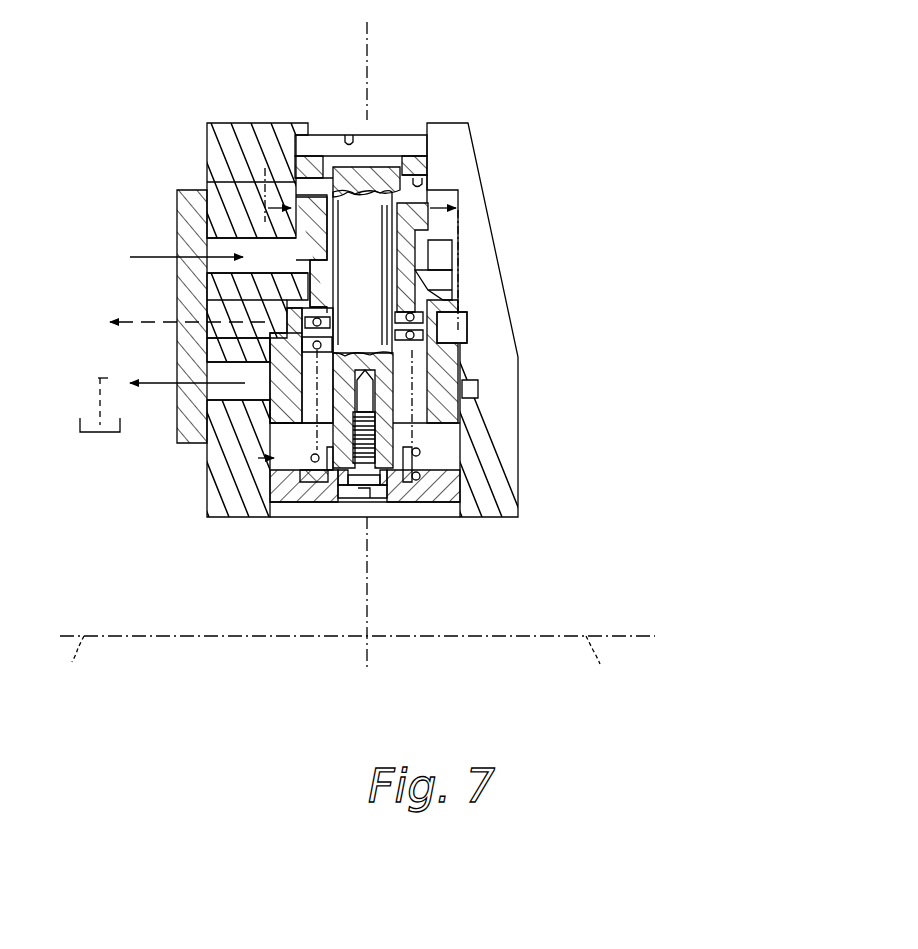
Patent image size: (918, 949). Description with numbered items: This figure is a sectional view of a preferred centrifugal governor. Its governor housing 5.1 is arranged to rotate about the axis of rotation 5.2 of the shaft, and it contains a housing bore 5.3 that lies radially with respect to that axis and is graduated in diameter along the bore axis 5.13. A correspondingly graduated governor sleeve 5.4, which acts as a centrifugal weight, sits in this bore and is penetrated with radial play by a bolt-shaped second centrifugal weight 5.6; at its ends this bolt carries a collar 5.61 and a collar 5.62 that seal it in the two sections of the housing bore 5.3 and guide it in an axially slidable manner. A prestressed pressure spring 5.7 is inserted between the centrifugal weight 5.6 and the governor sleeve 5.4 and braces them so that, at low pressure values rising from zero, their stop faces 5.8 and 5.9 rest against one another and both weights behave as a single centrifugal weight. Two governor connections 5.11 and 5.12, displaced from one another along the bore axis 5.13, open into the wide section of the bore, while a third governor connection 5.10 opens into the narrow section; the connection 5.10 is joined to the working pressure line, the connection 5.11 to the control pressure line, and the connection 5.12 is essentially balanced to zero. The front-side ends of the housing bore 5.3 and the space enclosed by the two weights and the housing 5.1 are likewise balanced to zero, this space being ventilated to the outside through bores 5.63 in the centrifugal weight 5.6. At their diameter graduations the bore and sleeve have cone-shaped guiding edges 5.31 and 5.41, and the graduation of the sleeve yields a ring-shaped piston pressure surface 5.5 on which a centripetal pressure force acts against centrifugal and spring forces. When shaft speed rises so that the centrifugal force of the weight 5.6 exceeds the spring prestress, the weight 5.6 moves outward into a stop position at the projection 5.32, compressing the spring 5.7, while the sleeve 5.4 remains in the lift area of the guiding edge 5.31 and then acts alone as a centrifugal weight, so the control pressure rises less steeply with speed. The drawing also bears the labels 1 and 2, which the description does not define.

The base plate 1 is at (282, 500).
The piston 2 is at (362, 293).
The governor housing 5.1 is at (222, 143).
The axis of rotation 5.2 is at (357, 665).
The housing bore 5.3 is at (258, 458).
The cone-shaped guiding edge 5.31 is at (430, 292).
The projection 5.32 is at (348, 134).
The governor sleeve 5.4 is at (447, 402).
The cone-shaped guiding edge 5.41 is at (440, 308).
The ring-shaped piston pressure surface 5.5 is at (446, 205).
The second centrifugal weight 5.6 is at (317, 506).
The collar 5.61 is at (442, 484).
The collar 5.62 is at (333, 167).
The bores 5.63 is at (329, 162).
The pressure spring 5.7 is at (403, 450).
The stop face 5.8 is at (268, 208).
The stop face 5.9 is at (417, 177).
The governor connection 5.10 is at (215, 245).
The governor connection 5.11 is at (215, 308).
The governor connection 5.12 is at (238, 400).
The bore axis 5.13 is at (367, 36).